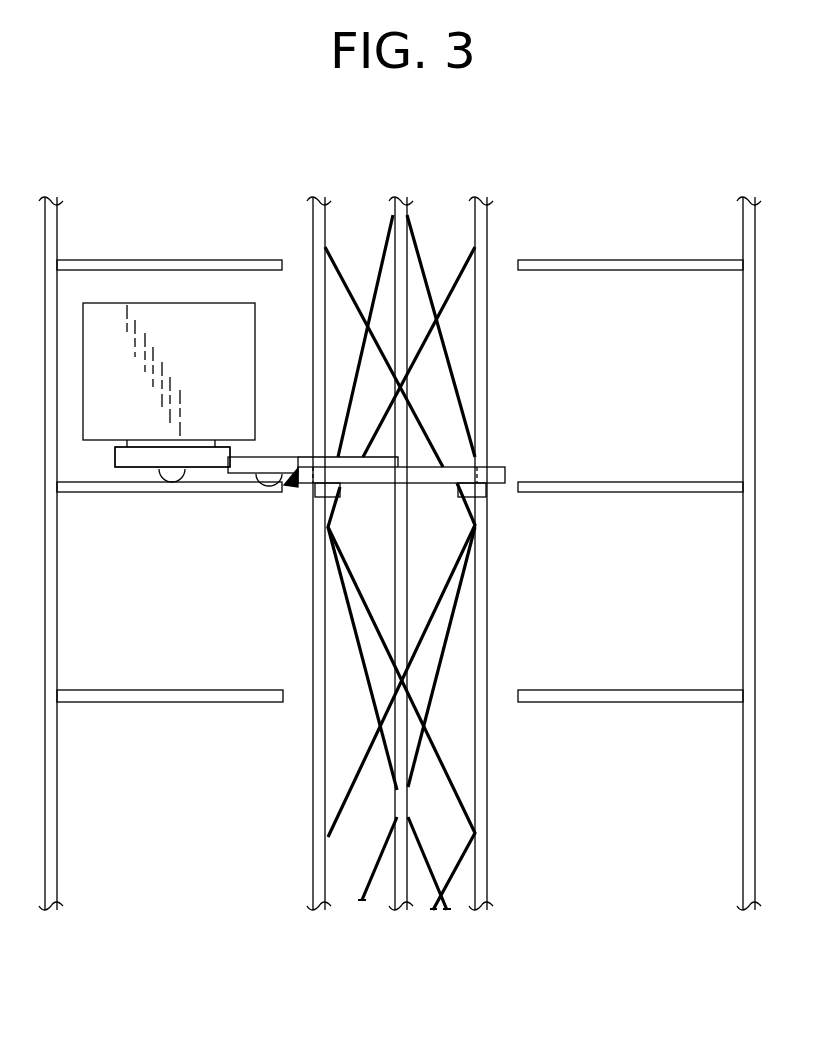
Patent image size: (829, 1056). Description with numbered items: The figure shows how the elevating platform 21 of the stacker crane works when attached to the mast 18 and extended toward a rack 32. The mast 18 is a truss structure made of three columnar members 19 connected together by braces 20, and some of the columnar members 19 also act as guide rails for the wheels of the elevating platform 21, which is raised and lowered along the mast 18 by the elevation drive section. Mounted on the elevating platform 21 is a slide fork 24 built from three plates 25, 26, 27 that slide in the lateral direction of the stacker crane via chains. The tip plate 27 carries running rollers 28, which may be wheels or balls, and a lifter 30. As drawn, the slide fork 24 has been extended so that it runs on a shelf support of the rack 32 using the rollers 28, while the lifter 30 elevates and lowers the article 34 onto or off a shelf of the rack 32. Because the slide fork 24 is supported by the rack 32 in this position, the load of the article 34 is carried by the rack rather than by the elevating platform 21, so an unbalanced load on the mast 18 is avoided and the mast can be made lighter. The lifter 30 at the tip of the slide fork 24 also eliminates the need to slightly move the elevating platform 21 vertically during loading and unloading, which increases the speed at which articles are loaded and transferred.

The mast 18 is at (500, 592).
The columnar members 19 is at (313, 628).
The braces 20 is at (450, 772).
The elevating platform 21 is at (494, 465).
The slide fork 24 is at (292, 490).
The plate 25 is at (430, 468).
The plate 26 is at (282, 457).
The tip plate 27 is at (204, 462).
The running rollers 28 is at (172, 470).
The lifter 30 is at (134, 452).
The rack 32 is at (93, 492).
The article 34 is at (237, 342).